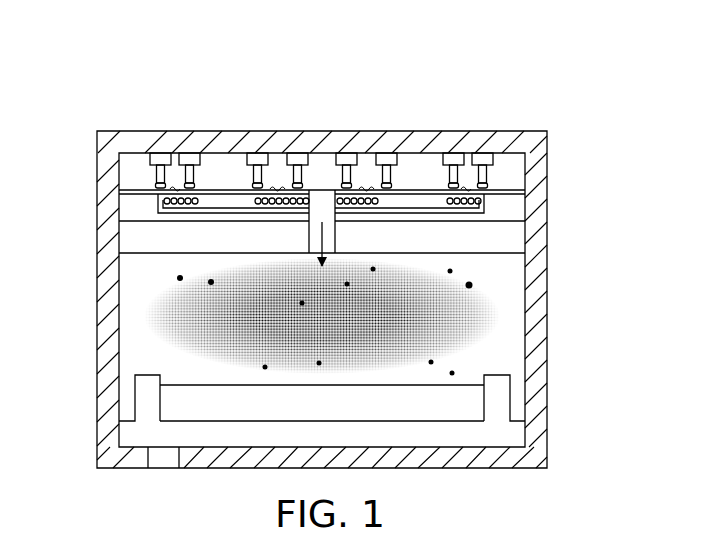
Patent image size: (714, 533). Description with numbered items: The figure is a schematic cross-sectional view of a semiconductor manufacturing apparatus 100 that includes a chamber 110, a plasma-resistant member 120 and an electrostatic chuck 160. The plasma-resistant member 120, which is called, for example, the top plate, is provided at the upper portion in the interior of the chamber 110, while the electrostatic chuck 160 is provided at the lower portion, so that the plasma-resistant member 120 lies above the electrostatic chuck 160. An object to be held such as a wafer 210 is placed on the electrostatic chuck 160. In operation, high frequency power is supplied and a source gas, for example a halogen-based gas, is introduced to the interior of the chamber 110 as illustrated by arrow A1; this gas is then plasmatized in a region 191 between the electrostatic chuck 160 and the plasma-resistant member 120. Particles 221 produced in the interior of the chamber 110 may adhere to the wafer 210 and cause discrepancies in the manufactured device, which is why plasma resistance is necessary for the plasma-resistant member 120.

The semiconductor manufacturing apparatus 100 is at (429, 79).
The chamber 110 is at (537, 175).
The plasma-resistant member 120 is at (150, 237).
The arrow A1 is at (327, 241).
The region 191 is at (325, 318).
The particles 221 is at (212, 285).
The wafer 210 is at (474, 382).
The electrostatic chuck 160 is at (470, 402).